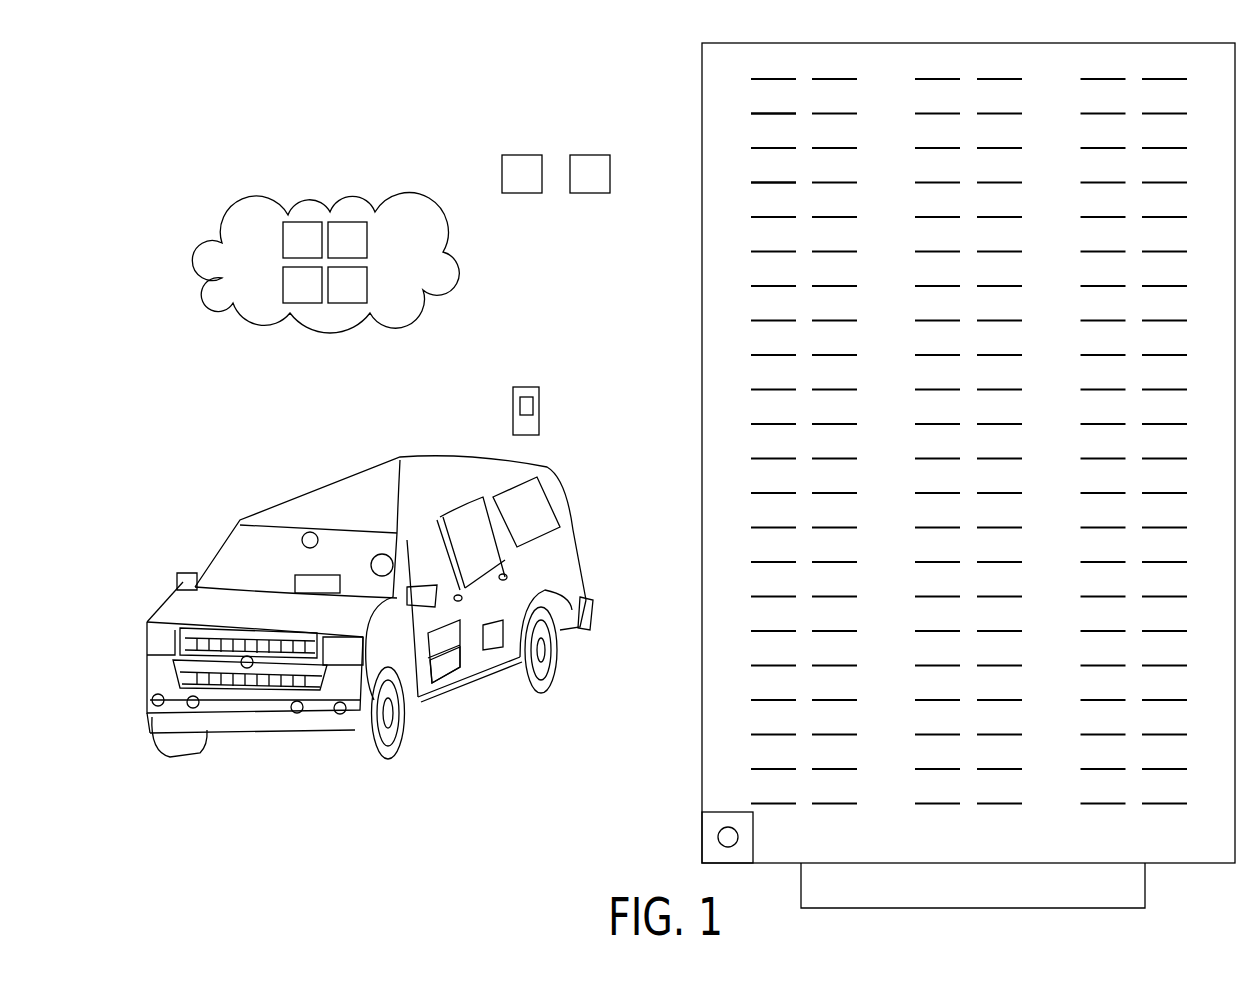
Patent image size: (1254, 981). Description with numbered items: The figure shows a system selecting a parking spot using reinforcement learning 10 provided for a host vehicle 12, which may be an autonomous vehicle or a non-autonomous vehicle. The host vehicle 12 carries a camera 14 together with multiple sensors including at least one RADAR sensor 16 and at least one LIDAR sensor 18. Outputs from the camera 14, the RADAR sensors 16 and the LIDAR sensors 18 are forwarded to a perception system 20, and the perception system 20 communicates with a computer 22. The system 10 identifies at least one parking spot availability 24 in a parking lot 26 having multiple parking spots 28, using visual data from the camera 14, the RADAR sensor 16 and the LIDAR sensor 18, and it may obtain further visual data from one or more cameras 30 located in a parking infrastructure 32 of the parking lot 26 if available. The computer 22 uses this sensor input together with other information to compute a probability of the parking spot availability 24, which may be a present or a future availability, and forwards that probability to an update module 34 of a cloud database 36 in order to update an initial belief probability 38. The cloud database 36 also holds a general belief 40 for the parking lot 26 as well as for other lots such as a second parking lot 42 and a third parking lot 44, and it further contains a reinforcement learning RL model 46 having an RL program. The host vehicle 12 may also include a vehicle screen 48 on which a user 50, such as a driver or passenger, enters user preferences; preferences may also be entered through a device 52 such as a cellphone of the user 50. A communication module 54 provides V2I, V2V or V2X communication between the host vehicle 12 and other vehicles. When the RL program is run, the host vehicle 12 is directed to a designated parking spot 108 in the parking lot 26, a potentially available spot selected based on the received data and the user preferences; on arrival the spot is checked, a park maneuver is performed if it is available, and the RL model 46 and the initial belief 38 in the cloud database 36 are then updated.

The system selecting a parking spot using reinforcement learning 10 is at (383, 100).
The host vehicle 12 is at (455, 478).
The camera 14 is at (300, 534).
The RADAR sensor 16 is at (194, 709).
The LIDAR sensor 18 is at (250, 668).
The perception system 20 is at (447, 638).
The computer 22 is at (440, 667).
The parking spot availability 24 is at (763, 100).
The parking lot 26 is at (892, 63).
The parking spots 28 is at (763, 200).
The cameras 30 is at (727, 838).
The parking infrastructure 32 is at (710, 822).
The update module 34 is at (361, 297).
The cloud database 36 is at (420, 251).
The initial belief probability 38 is at (316, 297).
The general belief 40 is at (316, 252).
The second parking lot 42 is at (536, 187).
The third parking lot 44 is at (604, 187).
The RL model 46 is at (361, 252).
The vehicle screen 48 is at (312, 585).
The user 50 is at (381, 553).
The device 52 is at (535, 405).
The communication module 54 is at (493, 637).
The designated parking spot 108 is at (763, 615).